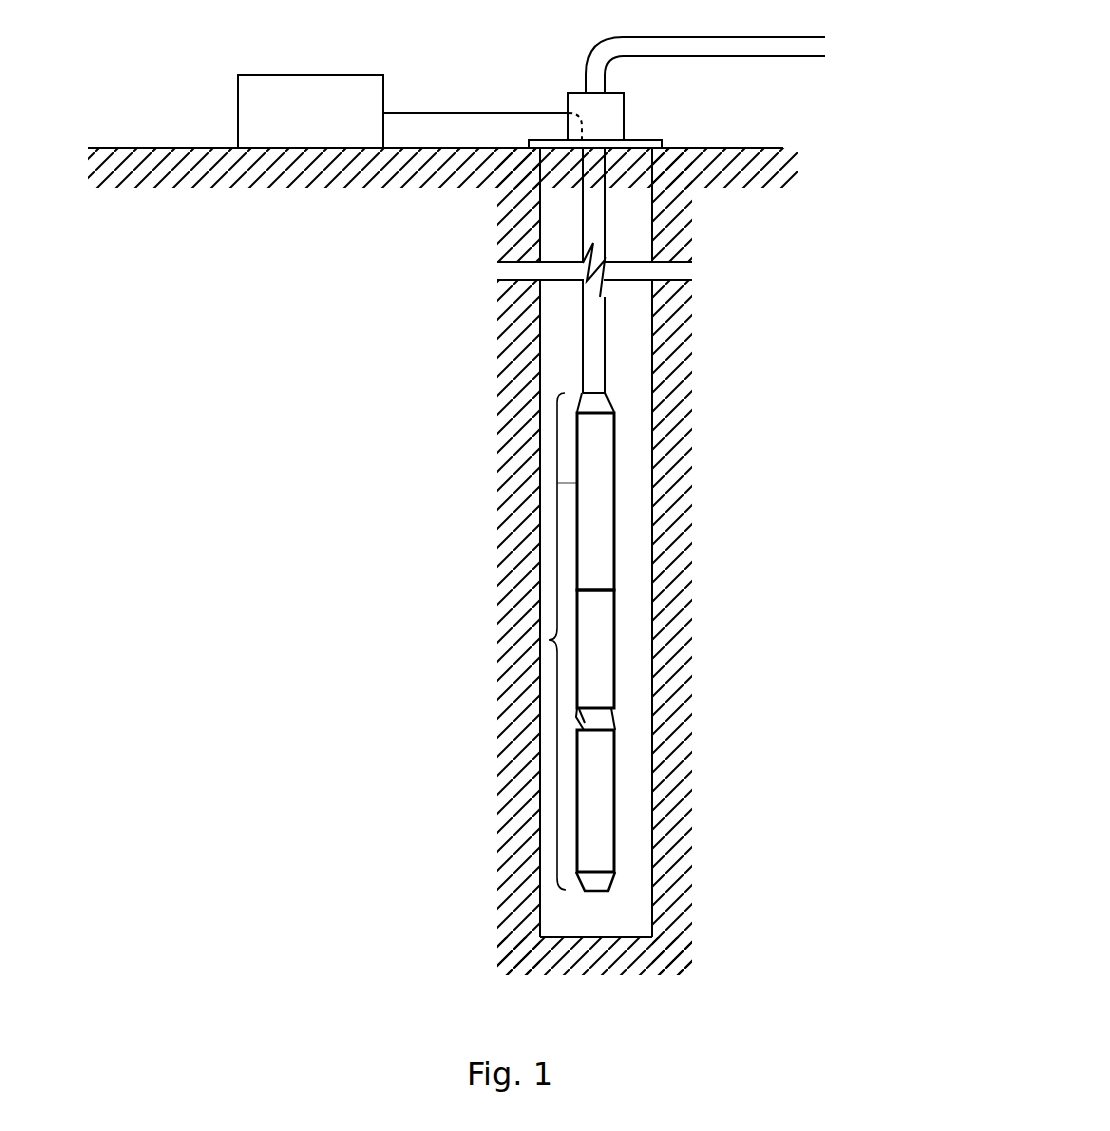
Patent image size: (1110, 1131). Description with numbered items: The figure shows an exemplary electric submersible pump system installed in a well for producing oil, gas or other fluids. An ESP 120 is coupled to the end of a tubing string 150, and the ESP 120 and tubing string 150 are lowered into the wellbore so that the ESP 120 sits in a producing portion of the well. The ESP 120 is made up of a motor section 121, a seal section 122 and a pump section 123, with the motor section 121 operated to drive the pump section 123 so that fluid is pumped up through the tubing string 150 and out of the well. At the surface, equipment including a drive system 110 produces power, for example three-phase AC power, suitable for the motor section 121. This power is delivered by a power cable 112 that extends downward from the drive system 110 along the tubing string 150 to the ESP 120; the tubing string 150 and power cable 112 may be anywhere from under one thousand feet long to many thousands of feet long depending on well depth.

The drive system 110 is at (312, 75).
The power cable 112 is at (473, 113).
The ESP 120 is at (596, 642).
The motor section 121 is at (615, 811).
The seal section 122 is at (615, 638).
The pump section 123 is at (614, 488).
The tubing string 150 is at (625, 332).